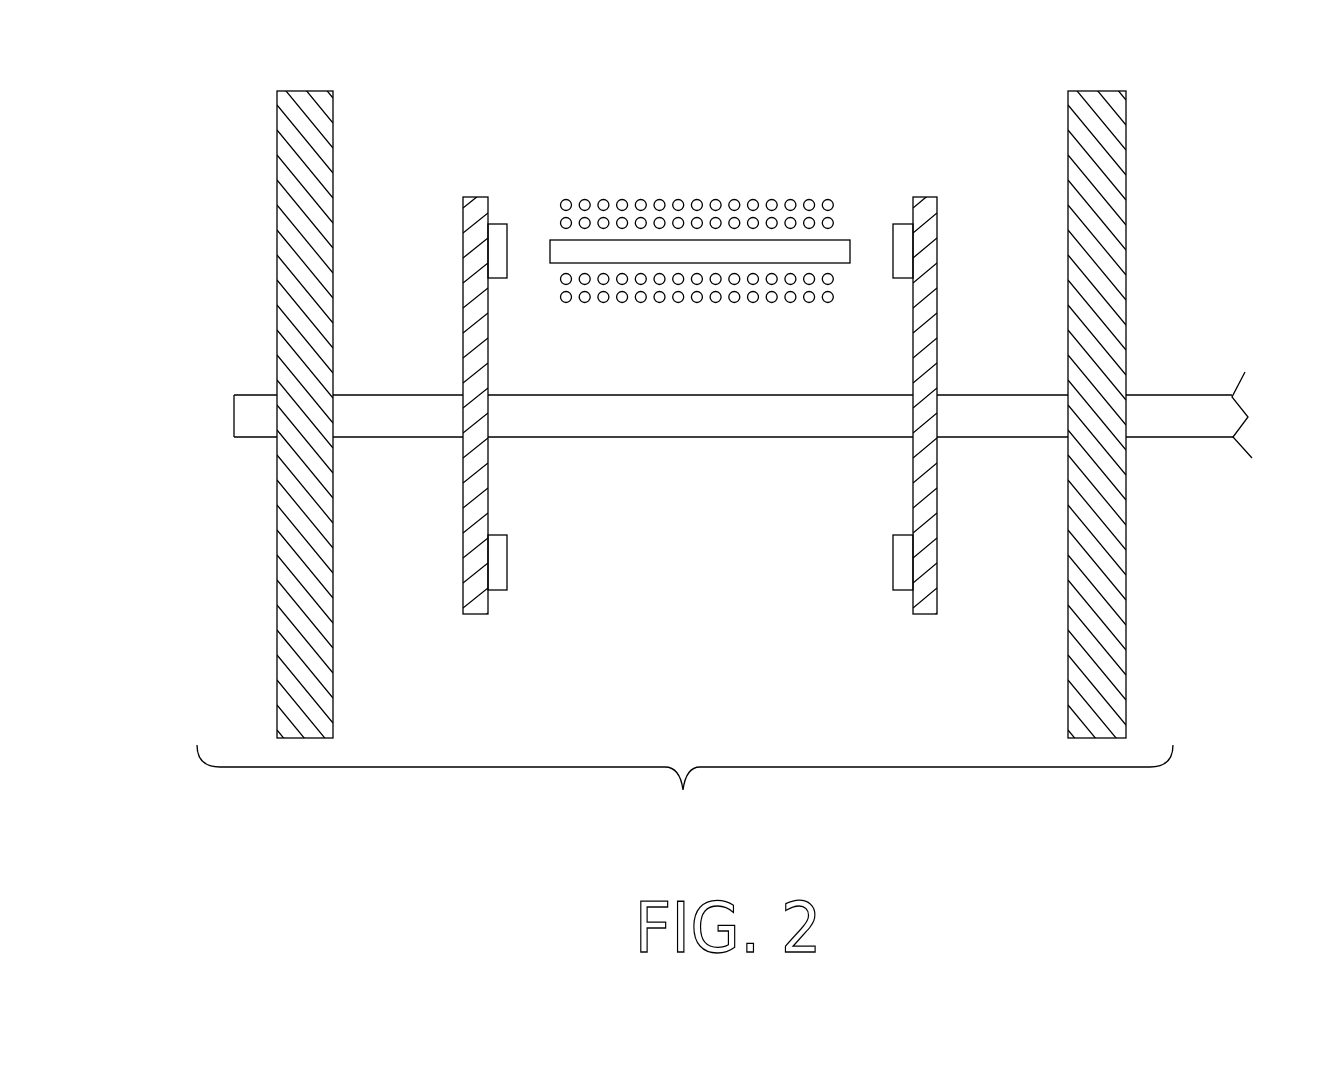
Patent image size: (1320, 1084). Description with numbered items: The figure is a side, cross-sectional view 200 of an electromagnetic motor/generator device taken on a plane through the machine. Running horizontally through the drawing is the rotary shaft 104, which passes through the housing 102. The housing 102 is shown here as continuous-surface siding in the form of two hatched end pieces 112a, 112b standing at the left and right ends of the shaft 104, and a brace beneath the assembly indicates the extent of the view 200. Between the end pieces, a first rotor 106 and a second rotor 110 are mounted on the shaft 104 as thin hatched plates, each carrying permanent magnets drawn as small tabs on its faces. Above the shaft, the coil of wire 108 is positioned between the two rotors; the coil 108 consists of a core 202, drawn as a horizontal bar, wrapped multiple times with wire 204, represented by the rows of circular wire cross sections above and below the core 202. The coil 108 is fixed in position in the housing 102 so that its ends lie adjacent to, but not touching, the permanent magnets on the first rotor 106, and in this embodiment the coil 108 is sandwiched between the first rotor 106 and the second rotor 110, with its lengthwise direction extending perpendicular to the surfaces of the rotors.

The housing 102 is at (278, 178).
The rotary shaft 104 is at (1158, 437).
The first rotor 106 is at (514, 397).
The coil of wire 108 is at (752, 173).
The second rotor 110 is at (923, 612).
The end piece 112a is at (273, 572).
The end piece 112b is at (1126, 318).
The cross-sectional view 200 is at (685, 794).
The core 202 is at (718, 248).
The wire 204 is at (818, 205).